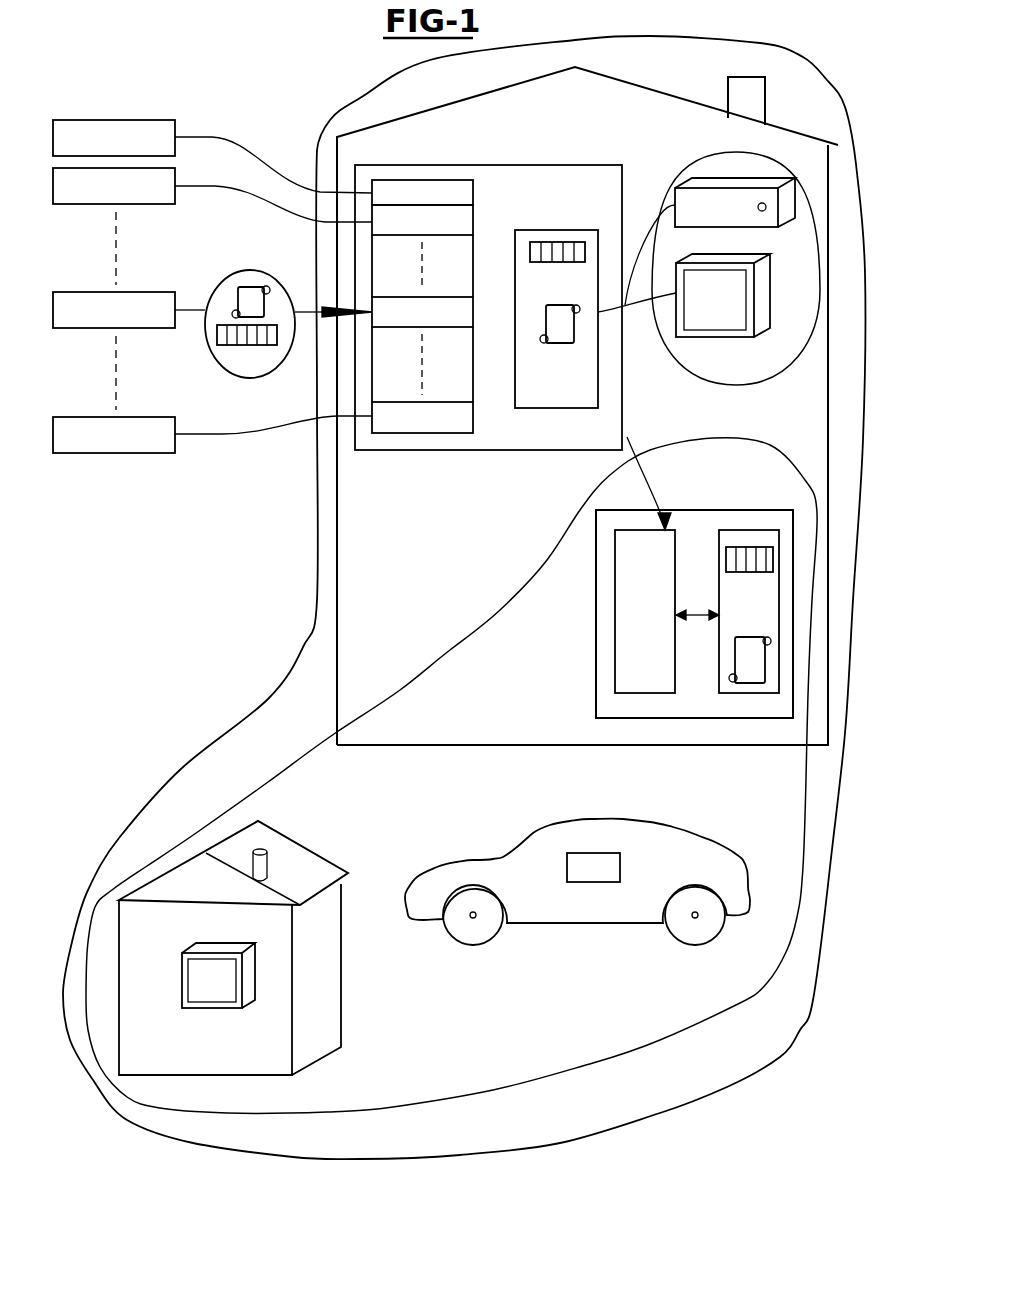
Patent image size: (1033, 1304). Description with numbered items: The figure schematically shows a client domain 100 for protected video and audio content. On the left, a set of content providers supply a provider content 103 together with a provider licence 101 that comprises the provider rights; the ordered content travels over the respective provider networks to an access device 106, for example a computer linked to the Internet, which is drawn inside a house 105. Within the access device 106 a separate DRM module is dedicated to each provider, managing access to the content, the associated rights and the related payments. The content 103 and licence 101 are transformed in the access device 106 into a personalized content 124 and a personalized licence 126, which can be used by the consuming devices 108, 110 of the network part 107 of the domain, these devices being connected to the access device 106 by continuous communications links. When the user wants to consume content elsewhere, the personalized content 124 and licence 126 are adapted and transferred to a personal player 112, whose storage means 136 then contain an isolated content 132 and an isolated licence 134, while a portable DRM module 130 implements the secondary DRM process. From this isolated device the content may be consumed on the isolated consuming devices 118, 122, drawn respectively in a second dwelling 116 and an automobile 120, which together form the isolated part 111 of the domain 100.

The client domain 100 is at (742, 1072).
The provider licence 101 is at (240, 303).
The provider content 103 is at (240, 347).
The home 105 is at (558, 747).
The access device 106 is at (447, 450).
The part of the domain containing consuming devices 107 is at (747, 383).
The consuming device 108 is at (708, 337).
The consuming device 110 is at (730, 178).
The isolated part 111 is at (757, 985).
The personal player 112 is at (593, 682).
The second home / vacation house 116 is at (343, 998).
The isolated consuming device 118 is at (223, 1010).
The automobile 120 is at (663, 822).
The isolated consuming device 122 is at (593, 867).
The personalized content 124 is at (555, 267).
The personalized licence 126 is at (558, 348).
The portable DRM module 130 is at (645, 611).
The isolated content 132 is at (748, 573).
The isolated licence 134 is at (735, 638).
The storage means 136 is at (743, 533).